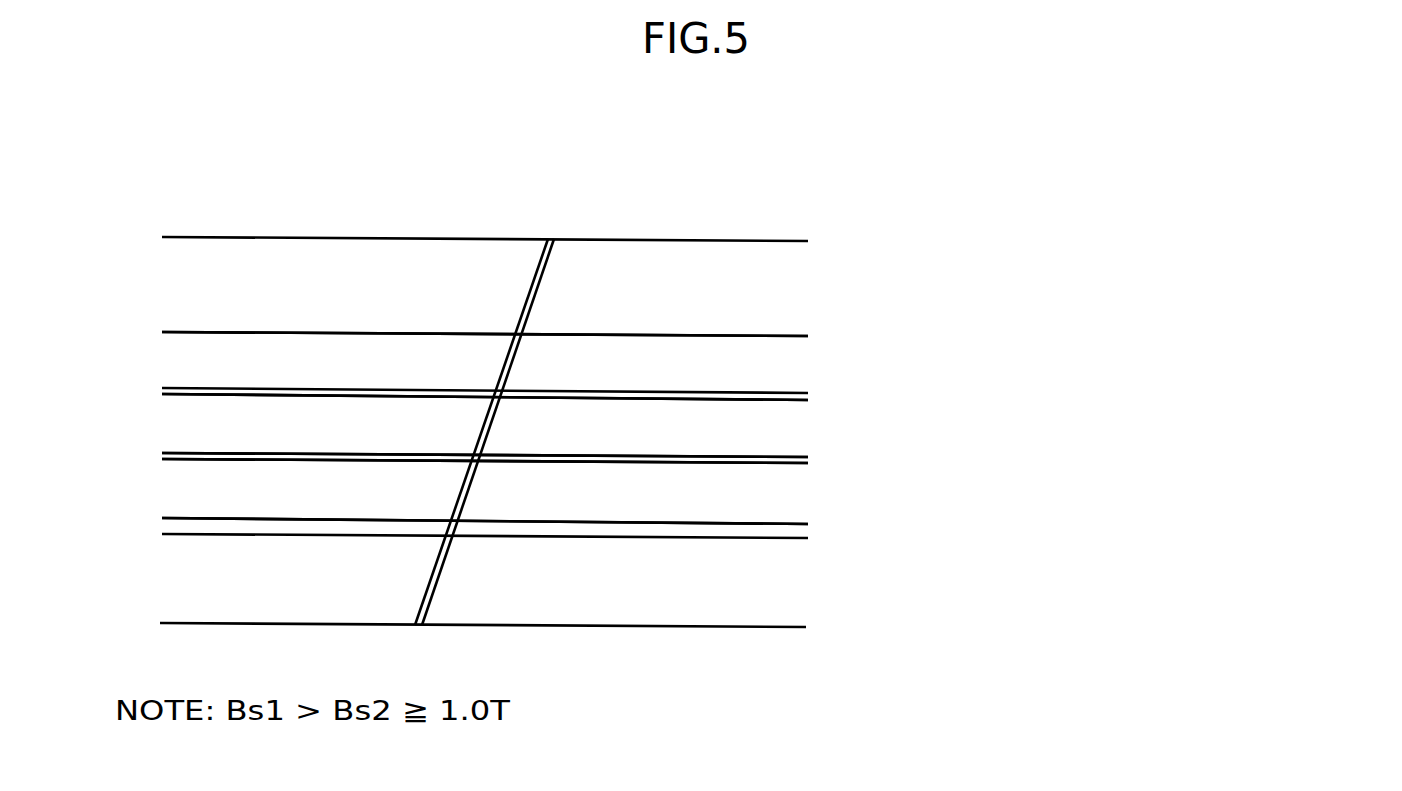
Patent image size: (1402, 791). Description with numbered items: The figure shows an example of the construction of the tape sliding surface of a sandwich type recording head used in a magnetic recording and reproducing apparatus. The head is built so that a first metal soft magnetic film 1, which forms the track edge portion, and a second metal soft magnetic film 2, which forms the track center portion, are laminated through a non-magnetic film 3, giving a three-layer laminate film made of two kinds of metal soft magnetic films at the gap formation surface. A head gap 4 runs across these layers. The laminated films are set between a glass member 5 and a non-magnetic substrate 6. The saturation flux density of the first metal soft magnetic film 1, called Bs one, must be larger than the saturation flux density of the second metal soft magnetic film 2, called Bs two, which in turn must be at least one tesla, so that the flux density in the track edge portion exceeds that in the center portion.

The first metal soft magnetic film 1 is at (172, 367).
The second metal soft magnetic film 2 is at (173, 430).
The non-magnetic film 3 is at (165, 390).
The head gap 4 is at (468, 493).
The glass member 5 is at (207, 525).
The non-magnetic substrate 6 is at (308, 262).